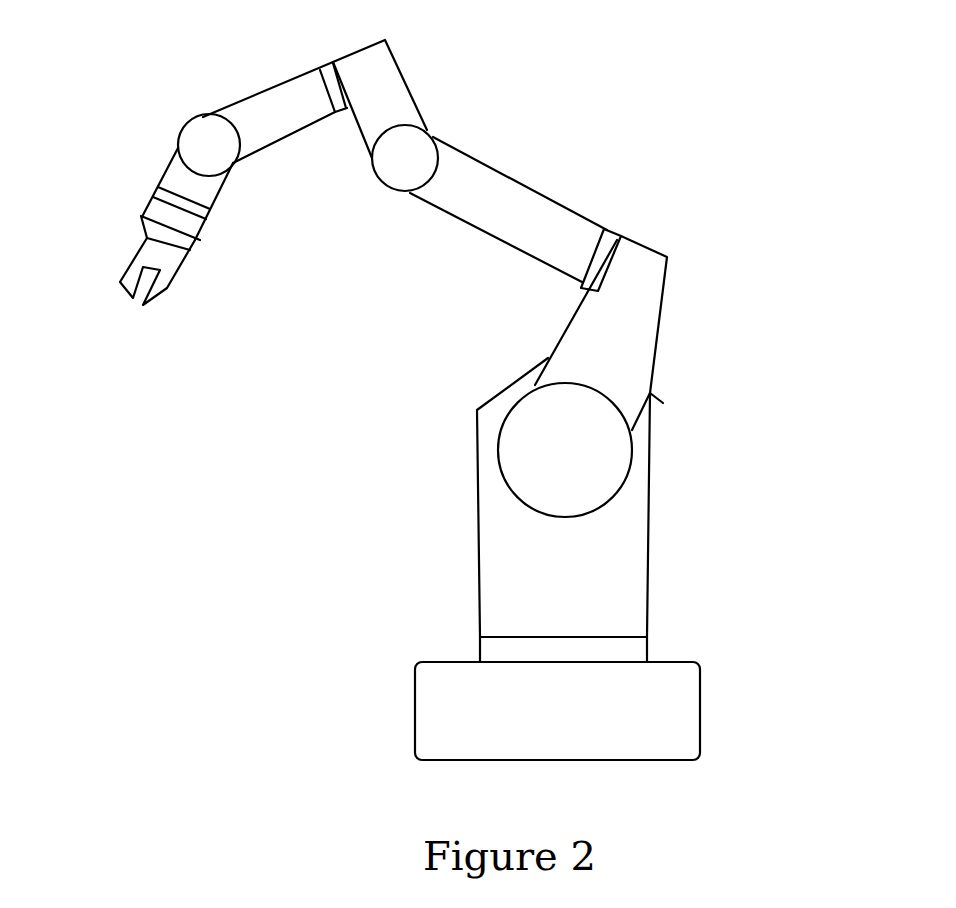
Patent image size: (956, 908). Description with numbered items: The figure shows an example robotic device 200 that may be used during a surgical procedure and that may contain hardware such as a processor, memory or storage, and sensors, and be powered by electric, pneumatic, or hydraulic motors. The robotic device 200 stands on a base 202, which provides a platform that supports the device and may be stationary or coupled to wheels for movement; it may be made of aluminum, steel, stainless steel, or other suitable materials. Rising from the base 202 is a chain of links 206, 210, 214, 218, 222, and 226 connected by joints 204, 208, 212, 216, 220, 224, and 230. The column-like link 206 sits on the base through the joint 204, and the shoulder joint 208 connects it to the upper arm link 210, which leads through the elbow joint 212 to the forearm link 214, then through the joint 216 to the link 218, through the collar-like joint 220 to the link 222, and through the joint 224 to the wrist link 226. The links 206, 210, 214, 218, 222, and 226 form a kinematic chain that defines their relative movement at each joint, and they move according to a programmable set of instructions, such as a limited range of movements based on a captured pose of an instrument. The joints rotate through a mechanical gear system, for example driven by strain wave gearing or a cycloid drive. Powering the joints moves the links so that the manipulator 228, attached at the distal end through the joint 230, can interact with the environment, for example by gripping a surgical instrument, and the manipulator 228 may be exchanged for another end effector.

The robotic device 200 is at (691, 76).
The base 202 is at (685, 692).
The joint 204 is at (490, 643).
The link 206 is at (637, 485).
The joint 208 is at (510, 457).
The link 210 is at (647, 313).
The joint 212 is at (617, 233).
The link 214 is at (517, 200).
The joint 216 is at (387, 170).
The link 218 is at (387, 68).
The joint 220 is at (325, 75).
The link 222 is at (263, 102).
The joint 224 is at (187, 132).
The link 226 is at (175, 172).
The manipulator 228 is at (143, 255).
The joint 230 is at (207, 212).